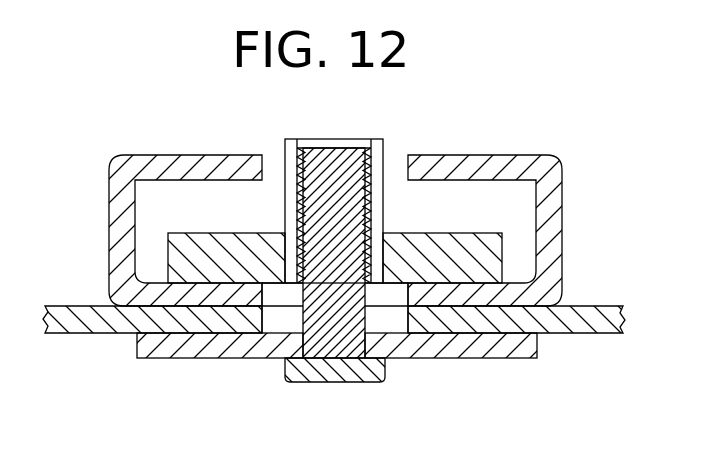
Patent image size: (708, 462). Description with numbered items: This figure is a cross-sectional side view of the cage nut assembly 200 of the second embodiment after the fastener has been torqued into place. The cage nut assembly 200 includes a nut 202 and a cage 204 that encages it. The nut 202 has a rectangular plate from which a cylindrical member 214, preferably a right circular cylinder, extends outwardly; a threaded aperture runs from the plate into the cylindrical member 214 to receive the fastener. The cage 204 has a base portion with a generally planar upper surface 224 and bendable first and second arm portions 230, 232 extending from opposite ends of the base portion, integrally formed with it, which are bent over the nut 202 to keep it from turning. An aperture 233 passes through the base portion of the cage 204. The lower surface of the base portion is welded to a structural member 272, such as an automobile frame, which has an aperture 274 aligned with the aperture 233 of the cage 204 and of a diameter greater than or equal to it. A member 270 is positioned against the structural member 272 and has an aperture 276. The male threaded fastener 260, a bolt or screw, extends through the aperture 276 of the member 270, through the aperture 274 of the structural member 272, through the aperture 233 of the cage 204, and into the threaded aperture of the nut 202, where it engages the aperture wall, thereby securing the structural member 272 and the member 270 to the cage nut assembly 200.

The cage nut assembly 200 is at (587, 176).
The nut 202 is at (380, 162).
The cage 204 is at (562, 217).
The cylindrical member 214 is at (287, 170).
The upper surface of the cage 224 is at (152, 266).
The first arm portion 230 is at (551, 160).
The second arm portion 232 is at (125, 167).
The aperture of the cage 233 is at (412, 358).
The male threaded fastener 260 is at (310, 373).
The member 270 is at (193, 347).
The structural member 272 is at (92, 320).
The aperture of the structural member 274 is at (396, 350).
The aperture of the member 276 is at (388, 315).